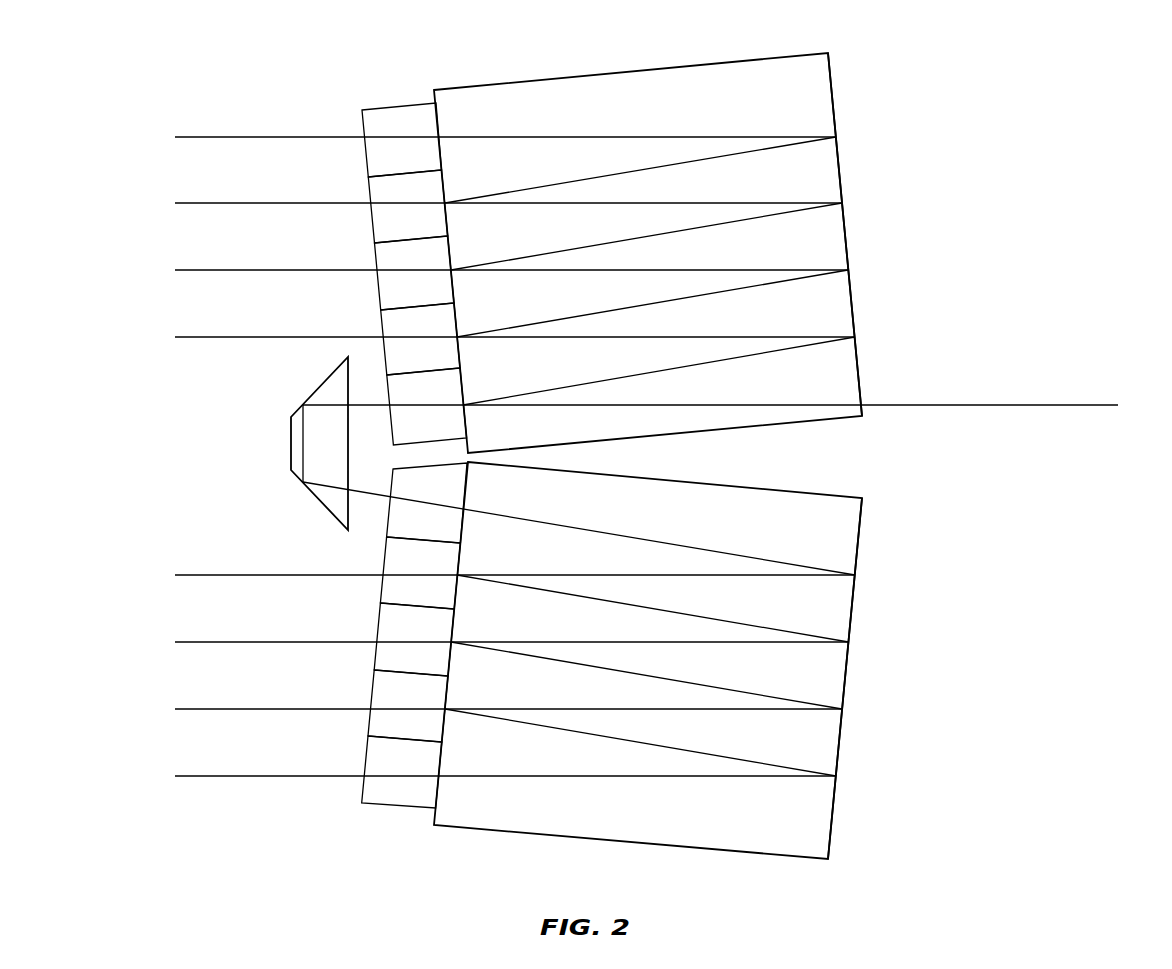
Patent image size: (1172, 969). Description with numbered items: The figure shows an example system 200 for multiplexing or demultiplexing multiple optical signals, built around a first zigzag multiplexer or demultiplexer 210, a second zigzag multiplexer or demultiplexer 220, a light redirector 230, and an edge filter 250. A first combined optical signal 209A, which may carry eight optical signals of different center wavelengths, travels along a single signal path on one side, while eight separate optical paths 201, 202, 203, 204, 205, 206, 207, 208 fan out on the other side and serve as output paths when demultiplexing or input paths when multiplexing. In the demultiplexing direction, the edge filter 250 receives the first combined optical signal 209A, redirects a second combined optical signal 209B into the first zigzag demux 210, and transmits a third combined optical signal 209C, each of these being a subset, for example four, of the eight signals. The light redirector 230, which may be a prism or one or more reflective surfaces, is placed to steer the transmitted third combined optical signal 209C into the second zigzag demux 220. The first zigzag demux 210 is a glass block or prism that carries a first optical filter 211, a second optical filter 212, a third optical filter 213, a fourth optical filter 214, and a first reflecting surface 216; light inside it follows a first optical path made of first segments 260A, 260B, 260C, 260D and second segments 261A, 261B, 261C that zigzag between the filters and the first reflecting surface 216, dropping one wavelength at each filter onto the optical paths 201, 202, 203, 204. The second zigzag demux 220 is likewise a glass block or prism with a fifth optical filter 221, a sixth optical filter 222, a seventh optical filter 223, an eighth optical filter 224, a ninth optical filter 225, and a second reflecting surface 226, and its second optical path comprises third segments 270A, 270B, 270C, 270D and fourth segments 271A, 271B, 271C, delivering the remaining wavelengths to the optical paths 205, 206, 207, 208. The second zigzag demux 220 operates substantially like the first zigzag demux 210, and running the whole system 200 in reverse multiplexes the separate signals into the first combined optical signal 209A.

The system 200 is at (1051, 58).
The optical path 201 is at (227, 137).
The optical path 202 is at (227, 203).
The optical path 203 is at (227, 270).
The optical path 204 is at (227, 337).
The optical path 205 is at (228, 575).
The optical path 206 is at (228, 642).
The optical path 207 is at (228, 709).
The optical path 208 is at (228, 776).
The first combined optical signal 209A is at (1067, 403).
The second combined optical signal 209B is at (703, 362).
The third combined optical signal 209C is at (702, 549).
The first zigzag multiplexer or demultiplexer 210 is at (550, 60).
The first optical filter 211 is at (420, 165).
The second optical filter 212 is at (426, 231).
The third optical filter 213 is at (432, 298).
The fourth optical filter 214 is at (438, 365).
The first reflecting surface 216 is at (858, 58).
The second zigzag multiplexer or demultiplexer 220 is at (553, 860).
The fifth optical filter 221 is at (438, 533).
The sixth optical filter 222 is at (435, 571).
The seventh optical filter 223 is at (429, 638).
The eighth optical filter 224 is at (423, 705).
The ninth optical filter 225 is at (417, 772).
The second reflecting surface 226 is at (858, 858).
The light redirector 230 is at (291, 447).
The edge filter 250 is at (444, 433).
The first segment 260A is at (563, 138).
The first segment 260B is at (563, 204).
The first segment 260C is at (563, 271).
The first segment 260D is at (563, 338).
The second segment 261A is at (702, 160).
The second segment 261B is at (702, 227).
The second segment 261C is at (702, 295).
The third segment 270A is at (563, 574).
The third segment 270B is at (563, 641).
The third segment 270C is at (563, 708).
The third segment 270D is at (563, 775).
The fourth segment 271A is at (702, 617).
The fourth segment 271B is at (702, 684).
The fourth segment 271C is at (702, 751).